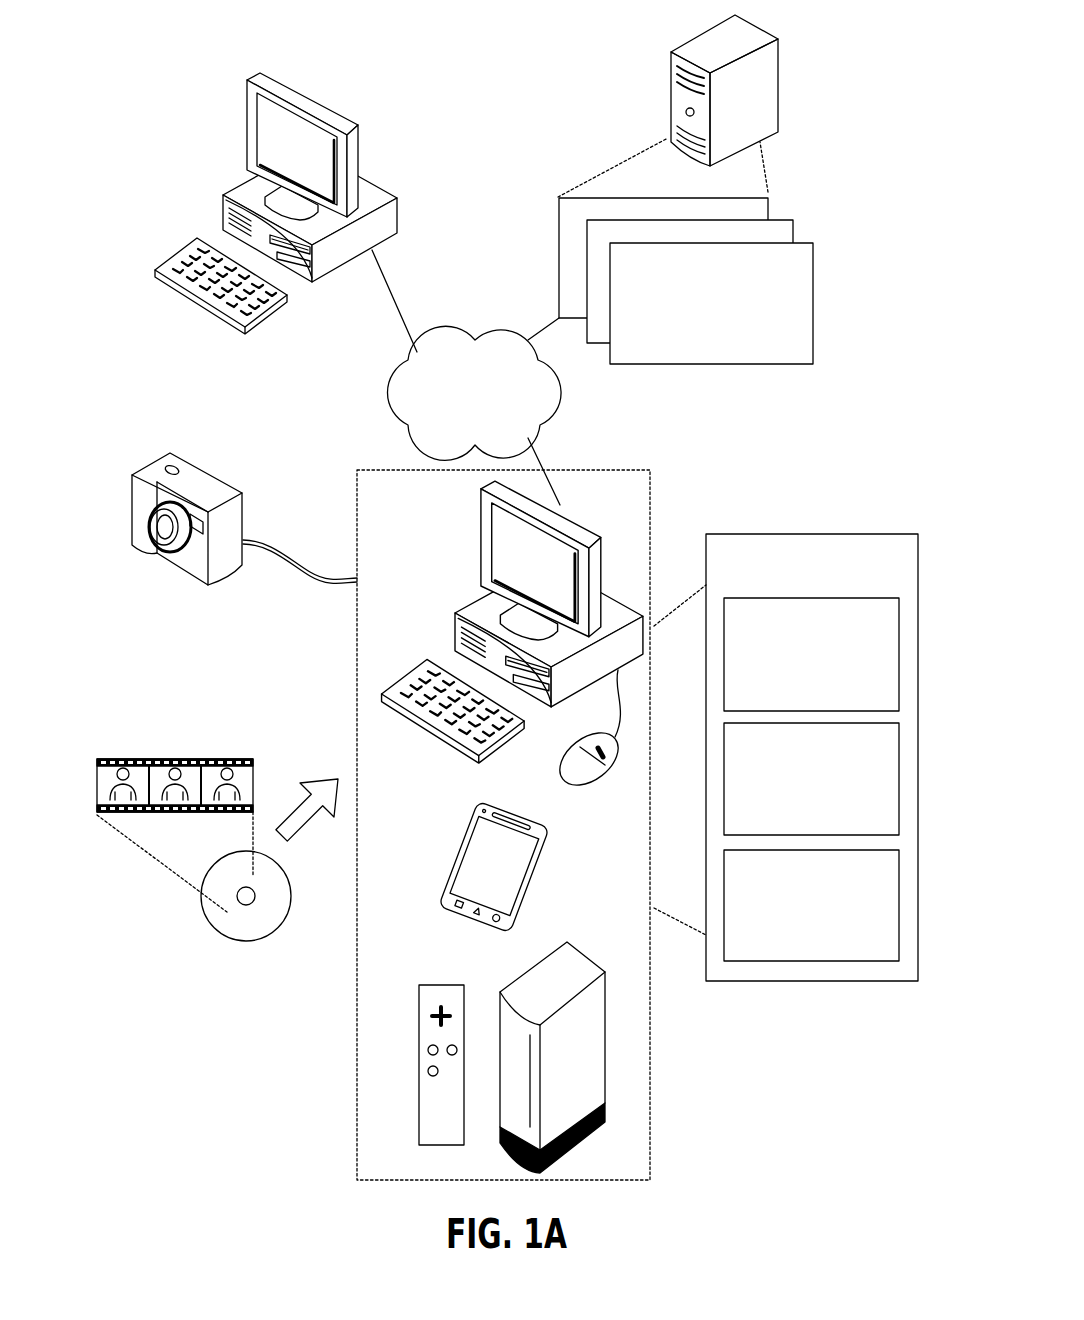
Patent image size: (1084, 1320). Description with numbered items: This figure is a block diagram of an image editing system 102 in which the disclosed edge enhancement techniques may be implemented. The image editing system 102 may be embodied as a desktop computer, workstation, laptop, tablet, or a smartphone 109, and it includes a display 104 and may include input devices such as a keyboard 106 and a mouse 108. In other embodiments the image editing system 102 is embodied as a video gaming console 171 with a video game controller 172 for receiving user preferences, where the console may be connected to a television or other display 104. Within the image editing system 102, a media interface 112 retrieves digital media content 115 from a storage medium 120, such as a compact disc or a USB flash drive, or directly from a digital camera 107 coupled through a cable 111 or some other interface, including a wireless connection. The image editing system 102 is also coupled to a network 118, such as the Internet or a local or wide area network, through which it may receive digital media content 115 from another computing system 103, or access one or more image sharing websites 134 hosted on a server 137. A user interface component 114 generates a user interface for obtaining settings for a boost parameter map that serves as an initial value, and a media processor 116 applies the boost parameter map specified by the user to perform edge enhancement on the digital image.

The image editing system 102 is at (865, 590).
The computing system 103 is at (248, 95).
The display 104 is at (483, 538).
The keyboard 106 is at (437, 733).
The digital camera 107 is at (153, 458).
The mouse 108 is at (563, 779).
The smartphone 109 is at (463, 828).
The cable 111 is at (272, 538).
The media interface 112 is at (826, 690).
The user interface component 114 is at (826, 815).
The digital media content 115 is at (168, 742).
The media processor 116 is at (826, 940).
The network 118 is at (488, 415).
The storage medium 120 is at (293, 893).
The image sharing websites 134 is at (725, 343).
The server 137 is at (697, 33).
The video gaming console 171 is at (525, 970).
The video game controller 172 is at (418, 1006).